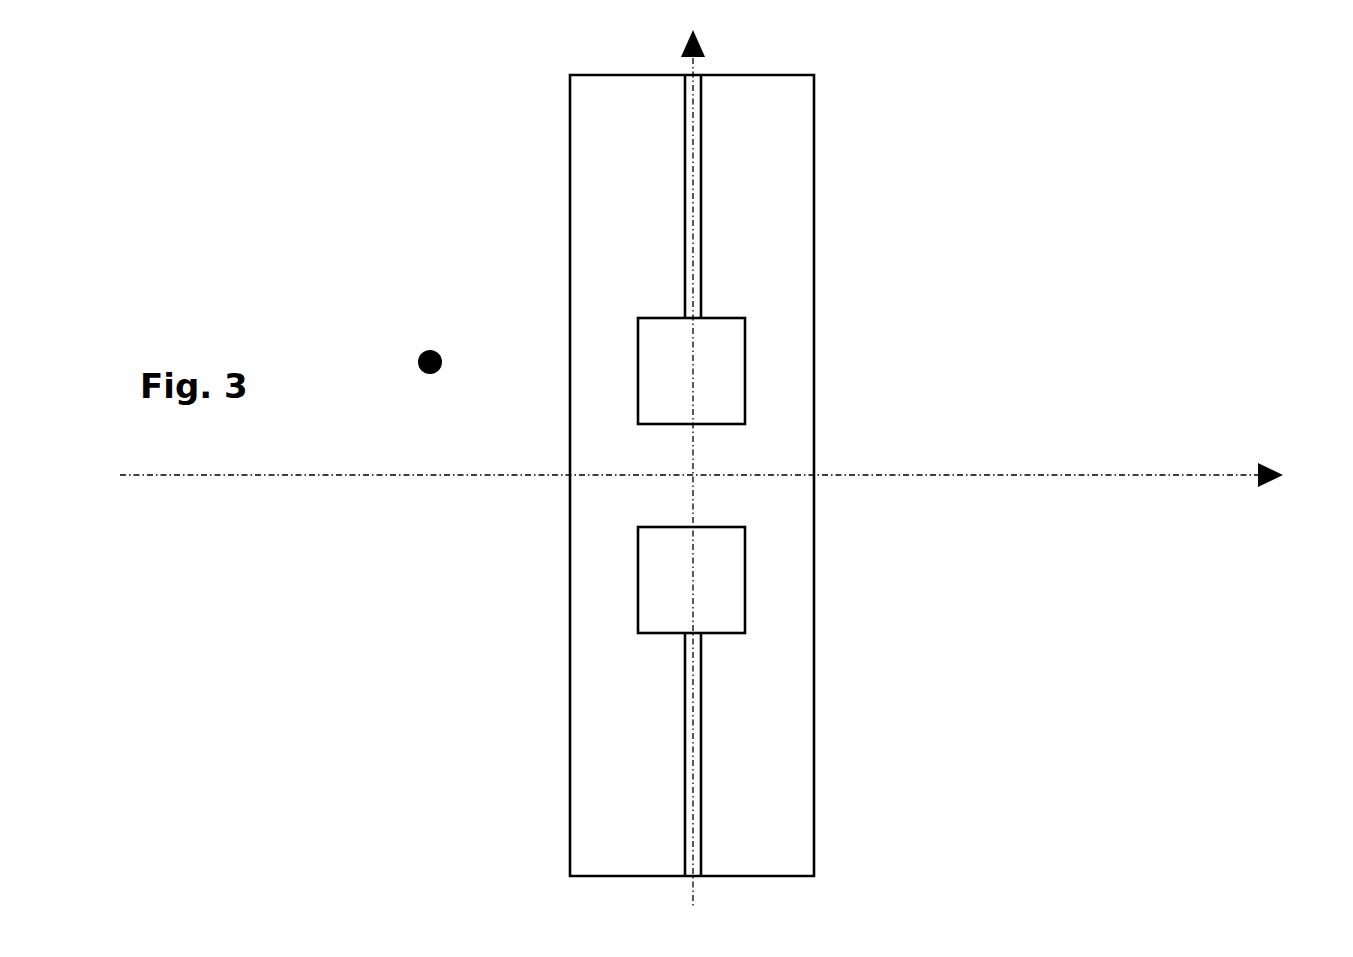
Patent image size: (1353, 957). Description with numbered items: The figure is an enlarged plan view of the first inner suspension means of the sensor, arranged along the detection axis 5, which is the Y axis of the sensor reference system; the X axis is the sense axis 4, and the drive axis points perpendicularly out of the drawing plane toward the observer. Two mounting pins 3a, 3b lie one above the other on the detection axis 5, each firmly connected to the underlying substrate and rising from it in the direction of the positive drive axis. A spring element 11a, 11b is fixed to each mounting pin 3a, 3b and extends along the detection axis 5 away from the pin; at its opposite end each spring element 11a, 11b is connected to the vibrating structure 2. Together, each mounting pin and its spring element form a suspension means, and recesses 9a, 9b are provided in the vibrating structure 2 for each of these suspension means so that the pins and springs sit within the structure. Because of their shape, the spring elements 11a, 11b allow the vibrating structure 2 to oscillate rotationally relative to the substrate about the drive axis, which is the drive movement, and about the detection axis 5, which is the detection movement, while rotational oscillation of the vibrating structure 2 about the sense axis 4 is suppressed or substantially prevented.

The vibrating structure 2 is at (416, 360).
The mounting pin 3a is at (718, 375).
The mounting pin 3b is at (722, 569).
The sense axis 4 is at (1097, 482).
The detection axis 5 is at (712, 33).
The recess 9a is at (626, 226).
The recess 9b is at (641, 695).
The spring element 11a is at (704, 184).
The spring element 11b is at (705, 740).